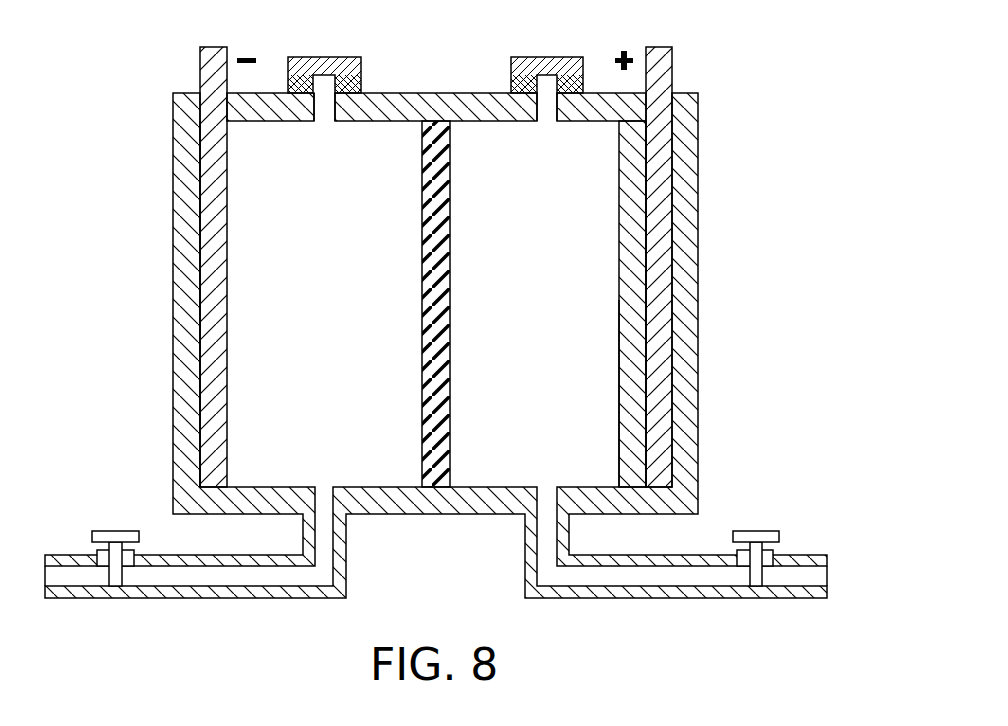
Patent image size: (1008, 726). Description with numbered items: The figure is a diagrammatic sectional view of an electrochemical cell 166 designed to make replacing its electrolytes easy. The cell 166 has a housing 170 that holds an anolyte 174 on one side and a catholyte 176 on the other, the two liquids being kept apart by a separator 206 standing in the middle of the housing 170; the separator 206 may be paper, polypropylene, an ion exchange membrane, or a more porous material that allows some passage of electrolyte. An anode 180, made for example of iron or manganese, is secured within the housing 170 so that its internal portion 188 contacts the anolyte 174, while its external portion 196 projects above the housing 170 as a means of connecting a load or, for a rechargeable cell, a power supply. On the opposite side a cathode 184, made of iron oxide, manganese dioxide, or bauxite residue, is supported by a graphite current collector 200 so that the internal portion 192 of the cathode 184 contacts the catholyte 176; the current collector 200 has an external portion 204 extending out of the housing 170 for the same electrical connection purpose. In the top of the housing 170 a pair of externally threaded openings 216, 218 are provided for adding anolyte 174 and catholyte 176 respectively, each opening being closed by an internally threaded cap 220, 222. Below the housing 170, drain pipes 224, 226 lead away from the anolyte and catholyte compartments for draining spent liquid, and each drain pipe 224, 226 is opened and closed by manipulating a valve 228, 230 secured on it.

The cell 166 is at (848, 136).
The housing 170 is at (688, 380).
The anolyte 174 is at (345, 315).
The catholyte 176 is at (556, 315).
The anode 180 is at (215, 338).
The cathode 184 is at (630, 170).
The internal portion of the anode 188 is at (215, 193).
The internal portion of the cathode 192 is at (630, 315).
The external portion of the anode 196 is at (200, 62).
The current collector 200 is at (658, 246).
The external portion of the current collector 204 is at (672, 62).
The separator 206 is at (422, 438).
The externally threaded opening 216 is at (323, 113).
The externally threaded opening 218 is at (547, 113).
The internally threaded cap 220 is at (360, 73).
The internally threaded cap 222 is at (511, 73).
The drain pipe 224 is at (162, 555).
The drain pipe 226 is at (713, 555).
The valve 228 is at (112, 531).
The valve 230 is at (779, 538).